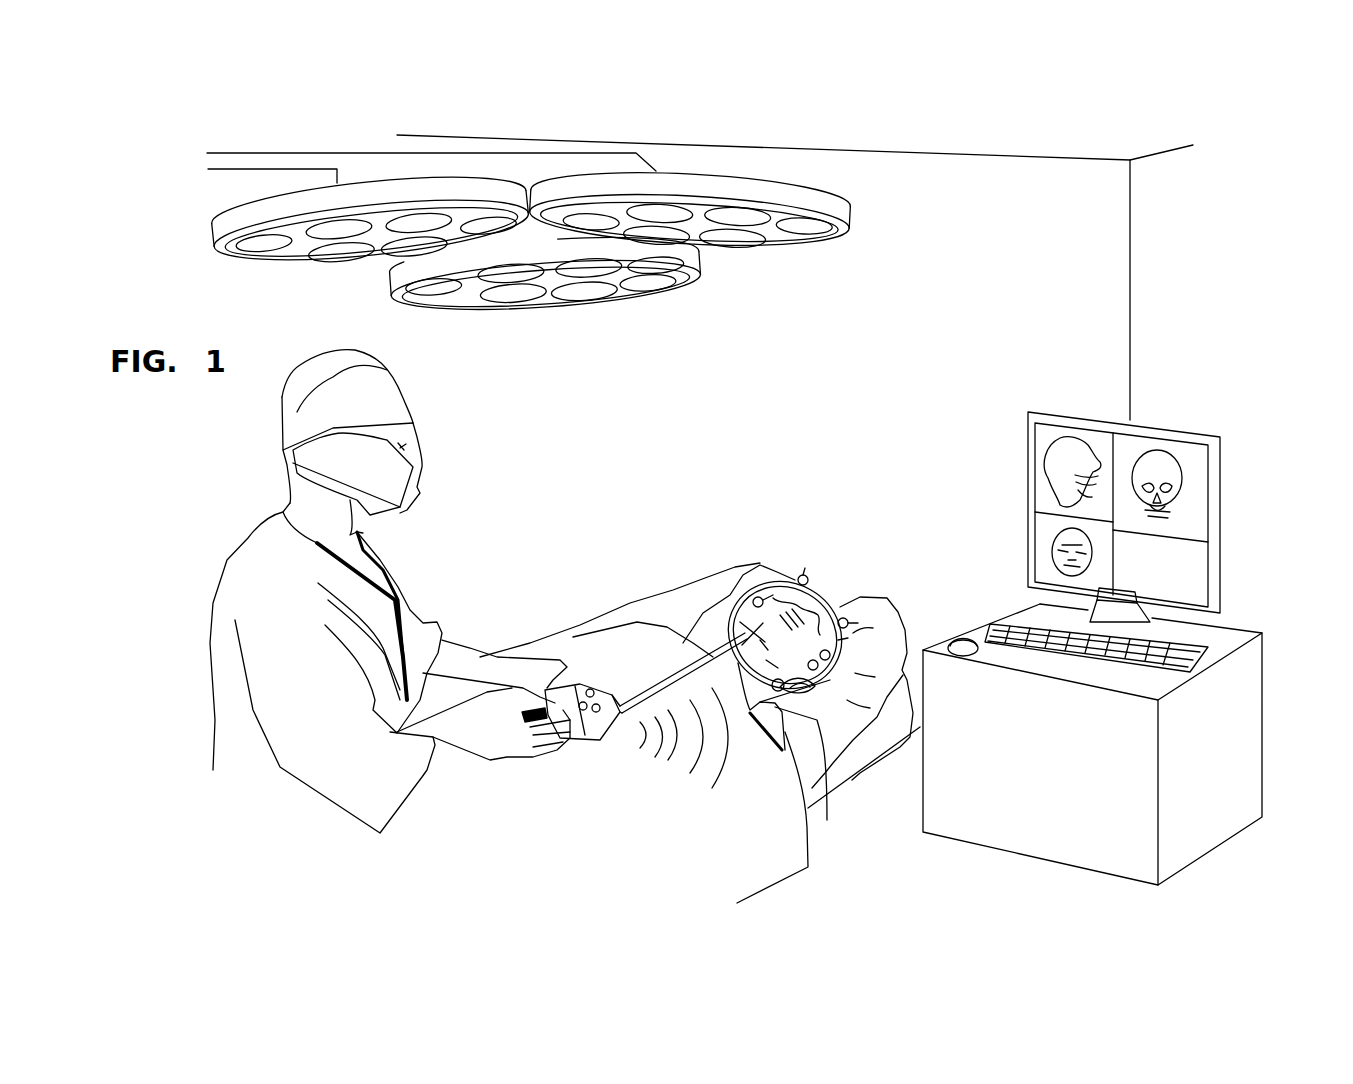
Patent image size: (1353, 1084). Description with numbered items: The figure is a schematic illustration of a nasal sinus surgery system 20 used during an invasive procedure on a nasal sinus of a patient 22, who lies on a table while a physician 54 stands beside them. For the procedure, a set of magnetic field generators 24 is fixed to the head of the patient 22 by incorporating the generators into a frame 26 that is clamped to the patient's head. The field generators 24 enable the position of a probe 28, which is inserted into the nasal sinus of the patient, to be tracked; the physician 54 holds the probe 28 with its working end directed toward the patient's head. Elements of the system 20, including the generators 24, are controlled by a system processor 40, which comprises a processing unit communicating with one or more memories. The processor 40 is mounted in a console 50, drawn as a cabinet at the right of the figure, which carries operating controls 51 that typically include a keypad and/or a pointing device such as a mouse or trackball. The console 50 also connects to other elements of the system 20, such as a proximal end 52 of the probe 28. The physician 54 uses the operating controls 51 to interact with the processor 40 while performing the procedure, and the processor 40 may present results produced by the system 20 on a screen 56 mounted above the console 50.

The nasal sinus surgery system 20 is at (1102, 308).
The patient 22 is at (822, 795).
The magnetic field generators 24 is at (740, 645).
The frame 26 is at (843, 620).
The probe 28 is at (683, 685).
The system processor 40 is at (1104, 635).
The console 50 is at (1252, 678).
The operating controls 51 is at (988, 633).
The proximal end of probe 52 is at (573, 685).
The physician 54 is at (260, 543).
The screen 56 is at (1172, 425).